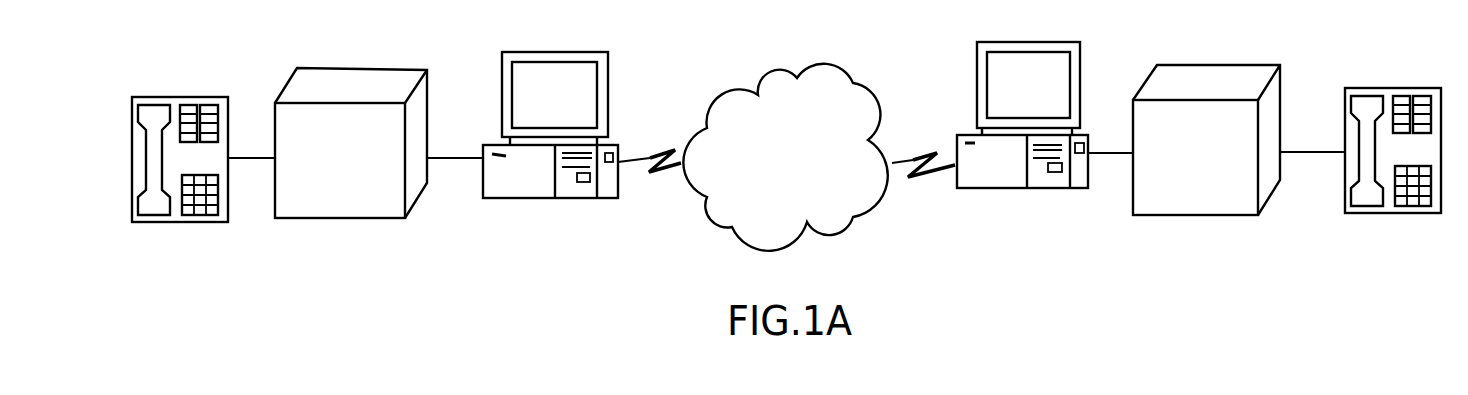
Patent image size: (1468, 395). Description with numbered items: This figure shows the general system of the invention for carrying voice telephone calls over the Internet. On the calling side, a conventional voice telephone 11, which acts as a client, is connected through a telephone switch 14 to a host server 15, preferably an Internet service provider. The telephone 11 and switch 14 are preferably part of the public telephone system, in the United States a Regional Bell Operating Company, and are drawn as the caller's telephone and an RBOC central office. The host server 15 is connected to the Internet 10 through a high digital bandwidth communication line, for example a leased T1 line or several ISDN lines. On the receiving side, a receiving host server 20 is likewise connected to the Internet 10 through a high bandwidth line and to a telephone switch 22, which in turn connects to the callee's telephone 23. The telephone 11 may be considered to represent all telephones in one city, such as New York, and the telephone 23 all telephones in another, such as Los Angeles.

The Internet 10 is at (842, 231).
The calling conventional voice telephone 11 is at (193, 167).
The telephone switch 14 is at (423, 97).
The host server 15 is at (608, 97).
The receiving host server 20 is at (980, 190).
The telephone switch 22 is at (1220, 213).
The telephone 23 is at (1345, 115).